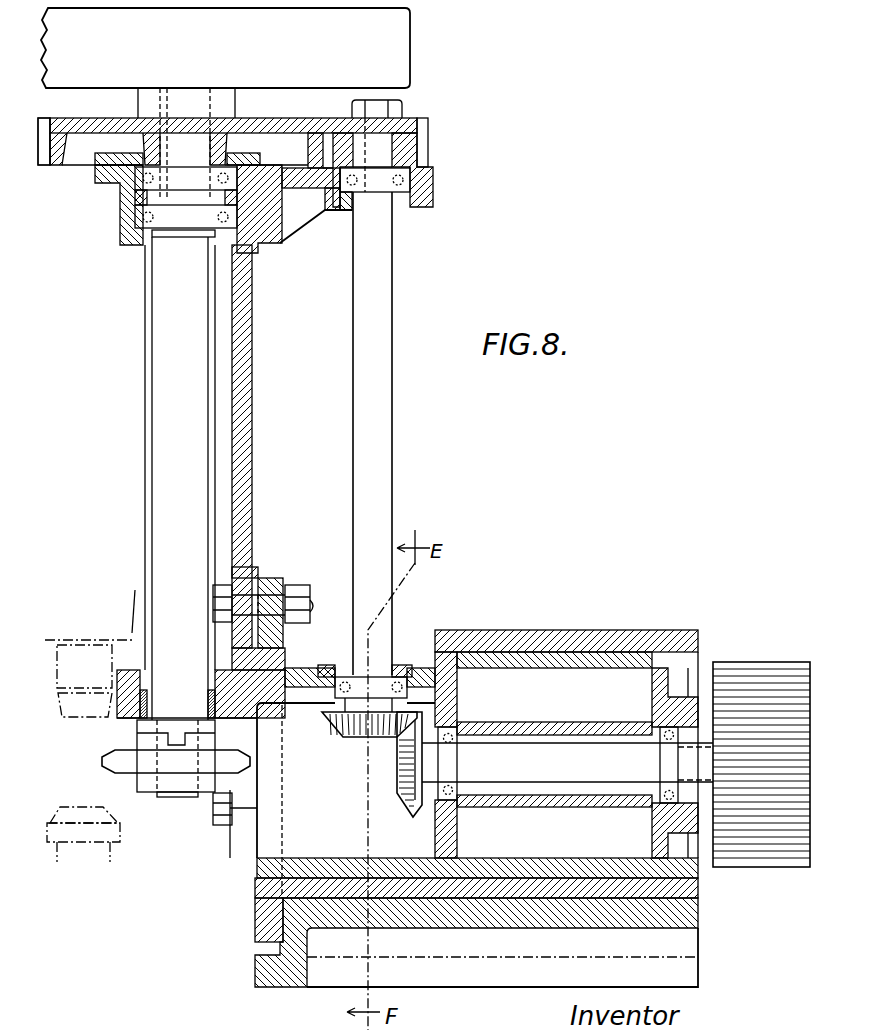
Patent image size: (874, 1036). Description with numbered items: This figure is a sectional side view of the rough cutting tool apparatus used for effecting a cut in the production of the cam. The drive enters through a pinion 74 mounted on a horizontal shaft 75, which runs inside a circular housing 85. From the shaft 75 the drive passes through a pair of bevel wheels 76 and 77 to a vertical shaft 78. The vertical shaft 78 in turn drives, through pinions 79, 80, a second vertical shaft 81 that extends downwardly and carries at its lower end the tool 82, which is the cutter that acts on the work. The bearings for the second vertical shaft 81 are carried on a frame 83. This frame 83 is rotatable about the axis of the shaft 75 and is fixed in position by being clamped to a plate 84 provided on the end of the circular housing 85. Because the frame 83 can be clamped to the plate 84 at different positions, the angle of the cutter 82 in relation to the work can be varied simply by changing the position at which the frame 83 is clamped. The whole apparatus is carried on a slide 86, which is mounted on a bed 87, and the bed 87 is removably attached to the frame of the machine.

The pinion 74 is at (768, 668).
The shaft 75 is at (558, 760).
The bevel wheel 76 is at (410, 800).
The bevel wheel 77 is at (350, 735).
The vertical shaft 78 is at (372, 501).
The pinion 79 is at (422, 137).
The pinion 80 is at (52, 165).
The second vertical shaft 81 is at (165, 473).
The tool 82 is at (112, 761).
The frame 83 is at (244, 465).
The plate 84 is at (275, 580).
The circular housing 85 is at (557, 640).
The slide 86 is at (687, 888).
The bed 87 is at (677, 918).